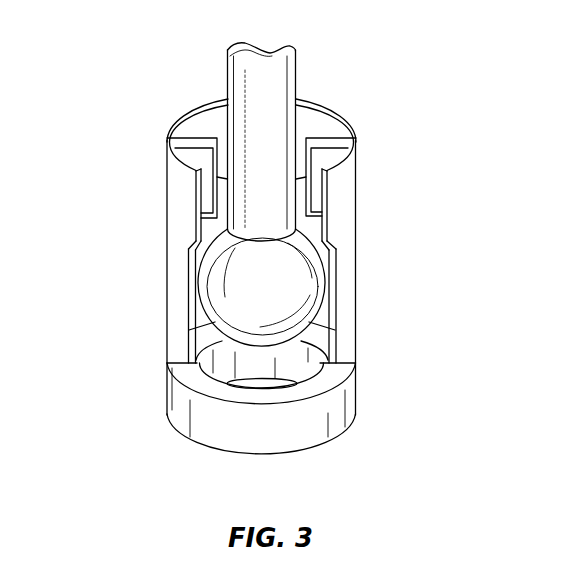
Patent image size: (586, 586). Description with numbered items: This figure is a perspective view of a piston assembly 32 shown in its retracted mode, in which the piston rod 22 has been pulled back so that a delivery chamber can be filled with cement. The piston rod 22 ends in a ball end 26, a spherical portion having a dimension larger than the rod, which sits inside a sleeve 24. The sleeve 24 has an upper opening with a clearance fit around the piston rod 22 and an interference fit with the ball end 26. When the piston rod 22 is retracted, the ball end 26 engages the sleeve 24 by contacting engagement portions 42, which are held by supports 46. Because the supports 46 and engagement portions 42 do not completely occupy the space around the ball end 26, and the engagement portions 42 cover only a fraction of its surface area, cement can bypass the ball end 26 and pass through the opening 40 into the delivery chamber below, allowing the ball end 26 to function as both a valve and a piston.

The piston assembly 32 is at (158, 30).
The piston rod 22 is at (262, 83).
The sleeve 24 is at (366, 462).
The ball end 26 is at (312, 299).
The opening 40 is at (222, 371).
The engagement portions 42 is at (203, 138).
The supports 46 is at (178, 282).